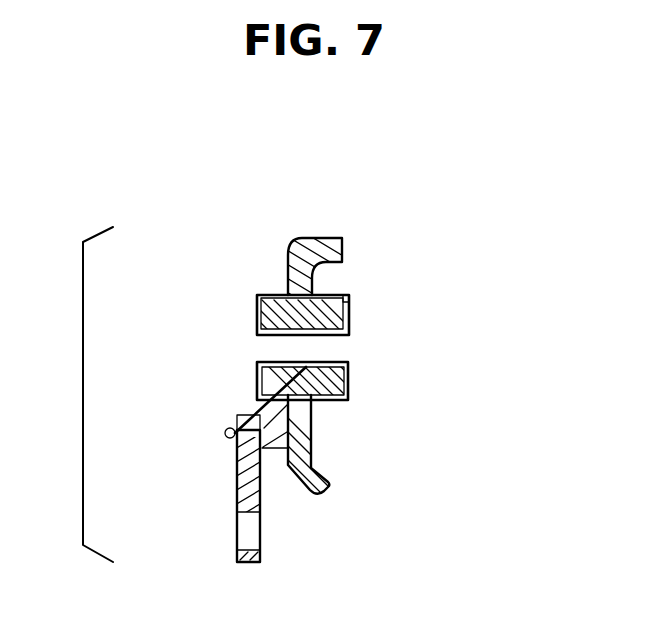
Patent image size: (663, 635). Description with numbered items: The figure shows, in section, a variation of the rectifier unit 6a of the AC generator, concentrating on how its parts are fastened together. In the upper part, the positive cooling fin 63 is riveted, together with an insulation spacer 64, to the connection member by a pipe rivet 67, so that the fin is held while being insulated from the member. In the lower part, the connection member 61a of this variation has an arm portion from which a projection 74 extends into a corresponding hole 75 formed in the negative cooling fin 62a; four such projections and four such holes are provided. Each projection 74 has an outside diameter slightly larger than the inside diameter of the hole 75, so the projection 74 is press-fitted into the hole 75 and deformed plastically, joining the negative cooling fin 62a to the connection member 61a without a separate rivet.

The positive cooling fin 63 is at (306, 253).
The connection member 61a is at (265, 296).
The pipe rivet 67 is at (256, 306).
The insulation spacer 64 is at (322, 296).
The rectifier unit 6a is at (346, 459).
The negative cooling fin 62a is at (261, 498).
The hole 75 is at (247, 425).
The projection 74 is at (227, 430).